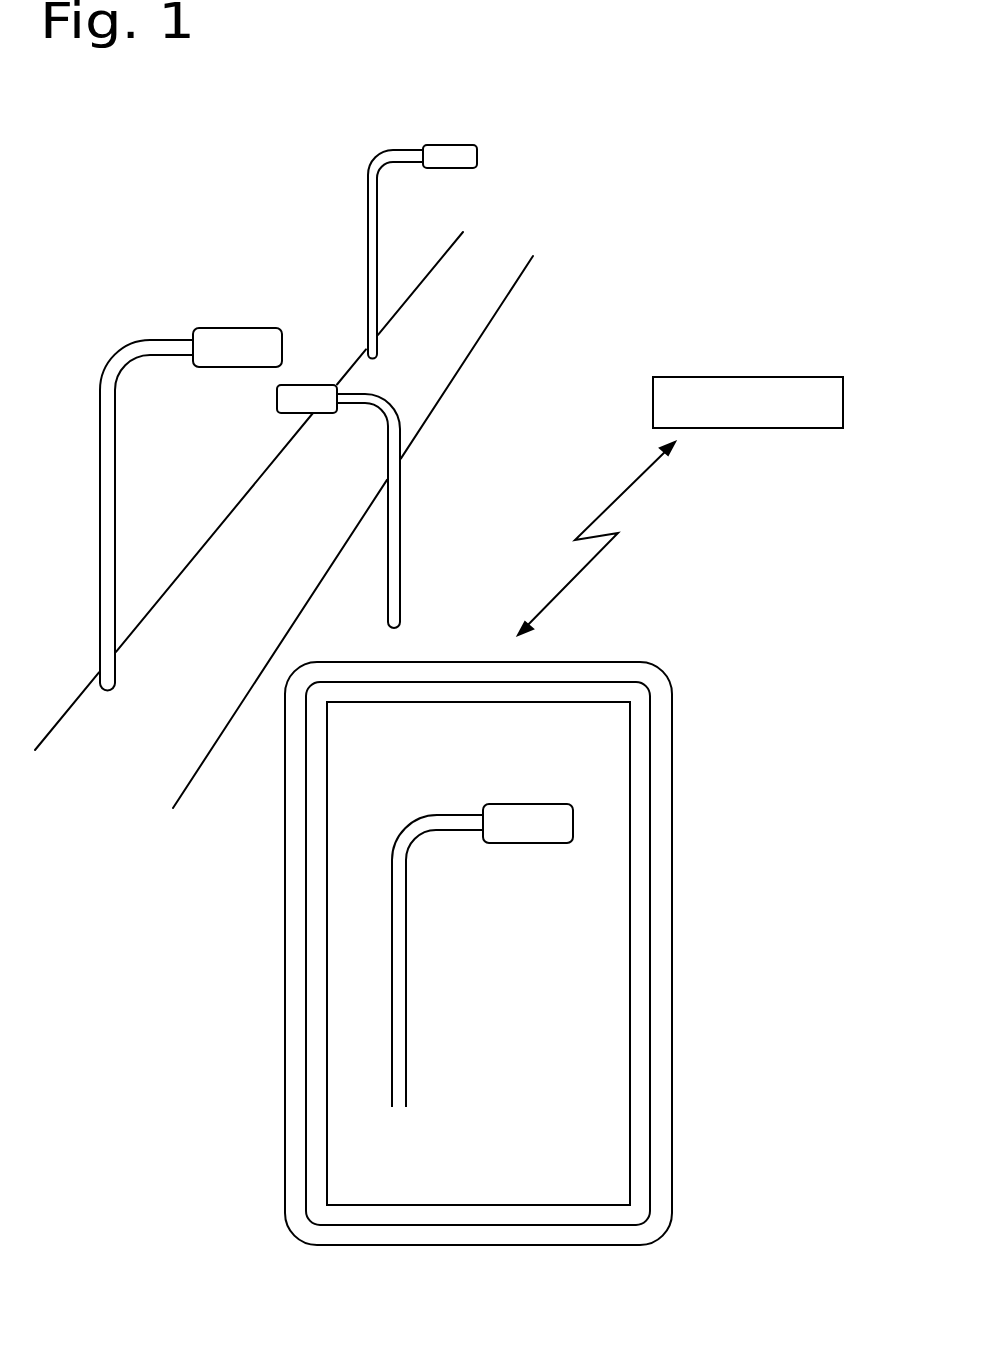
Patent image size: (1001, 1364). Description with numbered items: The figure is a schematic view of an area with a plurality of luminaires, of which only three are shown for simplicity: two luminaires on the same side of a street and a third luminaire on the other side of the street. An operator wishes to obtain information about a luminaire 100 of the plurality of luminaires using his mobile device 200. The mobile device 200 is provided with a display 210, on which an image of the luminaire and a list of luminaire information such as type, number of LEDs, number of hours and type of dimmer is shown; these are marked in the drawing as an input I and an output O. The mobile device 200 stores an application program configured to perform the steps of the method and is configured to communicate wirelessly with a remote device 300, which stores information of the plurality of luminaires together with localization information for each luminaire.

The luminaire 100 is at (130, 472).
The mobile device 200 is at (548, 953).
The display 210 is at (637, 1145).
The remote device 300 is at (788, 417).
The input (image of luminaire) I is at (582, 750).
The output (luminaire information) O is at (555, 965).